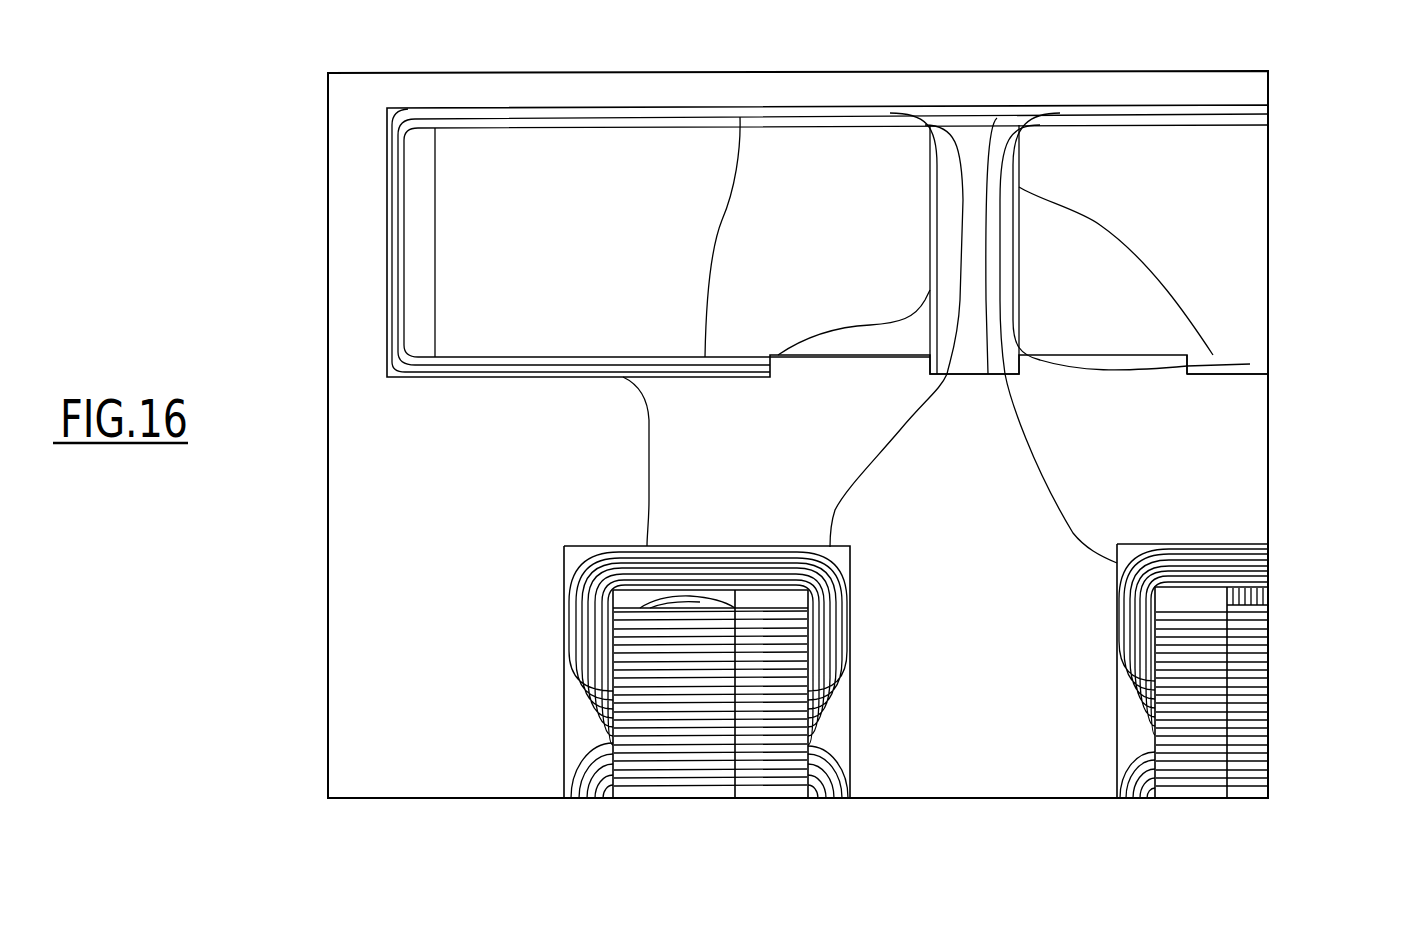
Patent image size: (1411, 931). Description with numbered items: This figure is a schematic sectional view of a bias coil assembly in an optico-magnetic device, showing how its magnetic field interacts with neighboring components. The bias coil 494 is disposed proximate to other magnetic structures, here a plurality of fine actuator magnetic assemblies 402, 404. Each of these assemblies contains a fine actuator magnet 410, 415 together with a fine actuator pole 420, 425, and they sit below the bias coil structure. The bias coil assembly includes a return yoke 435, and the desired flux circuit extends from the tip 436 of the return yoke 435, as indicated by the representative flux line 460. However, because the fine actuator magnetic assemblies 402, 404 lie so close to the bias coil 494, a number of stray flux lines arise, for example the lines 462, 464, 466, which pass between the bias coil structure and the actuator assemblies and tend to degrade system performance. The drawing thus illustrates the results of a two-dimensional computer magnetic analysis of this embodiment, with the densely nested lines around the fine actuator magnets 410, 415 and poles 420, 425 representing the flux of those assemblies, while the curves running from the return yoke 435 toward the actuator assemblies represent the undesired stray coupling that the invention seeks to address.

The fine actuator magnetic assembly 402 is at (1278, 750).
The fine actuator magnetic assembly 404 is at (548, 702).
The fine actuator magnet 410 is at (1260, 658).
The fine actuator magnet 415 is at (780, 775).
The fine actuator pole 420 is at (1262, 558).
The fine actuator pole 425 is at (577, 742).
The return yoke 435 is at (972, 138).
The tip 436 is at (1240, 365).
The representative flux line 460 is at (1090, 217).
The stray flux line 462 is at (1067, 530).
The stray flux line 464 is at (858, 480).
The stray flux line 466 is at (650, 464).
The bias coil 494 is at (1238, 218).